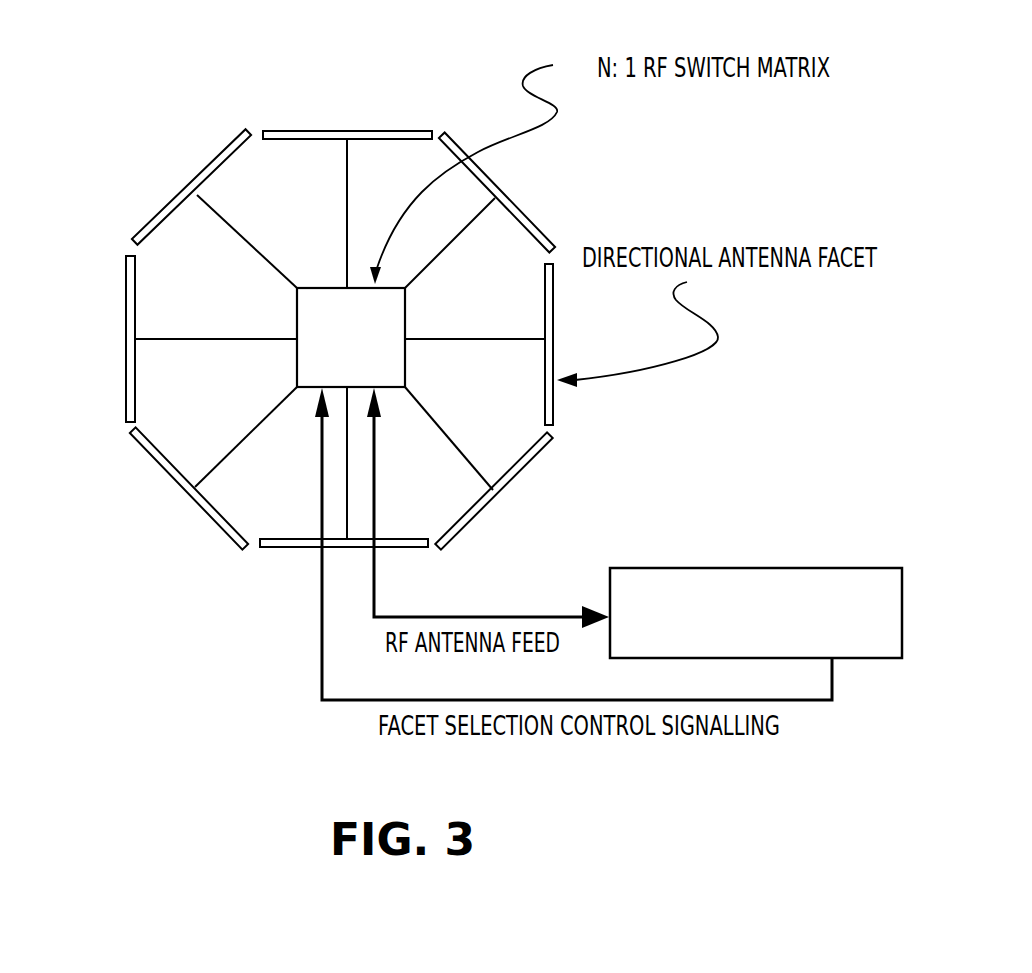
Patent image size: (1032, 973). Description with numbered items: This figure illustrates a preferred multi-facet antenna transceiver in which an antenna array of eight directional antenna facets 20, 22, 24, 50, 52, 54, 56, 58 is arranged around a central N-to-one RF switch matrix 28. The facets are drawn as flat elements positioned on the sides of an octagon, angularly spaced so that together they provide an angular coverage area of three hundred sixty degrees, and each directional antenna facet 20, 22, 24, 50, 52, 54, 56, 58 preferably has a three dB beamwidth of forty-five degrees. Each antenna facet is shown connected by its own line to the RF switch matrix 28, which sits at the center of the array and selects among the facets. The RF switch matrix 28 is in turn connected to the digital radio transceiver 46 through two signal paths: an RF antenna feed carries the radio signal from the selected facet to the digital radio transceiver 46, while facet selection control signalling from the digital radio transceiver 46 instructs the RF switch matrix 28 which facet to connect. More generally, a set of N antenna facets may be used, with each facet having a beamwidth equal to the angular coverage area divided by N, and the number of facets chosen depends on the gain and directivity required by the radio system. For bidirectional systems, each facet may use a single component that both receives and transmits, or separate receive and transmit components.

The directional antenna facet 20 is at (303, 544).
The directional antenna facet 22 is at (210, 513).
The directional antenna facet 24 is at (132, 314).
The RF switch matrix 28 is at (360, 322).
The digital radio transceiver 46 is at (840, 568).
The directional antenna facet 50 is at (182, 196).
The directional antenna facet 52 is at (378, 131).
The directional antenna facet 54 is at (537, 230).
The directional antenna facet 56 is at (548, 400).
The directional antenna facet 58 is at (478, 507).